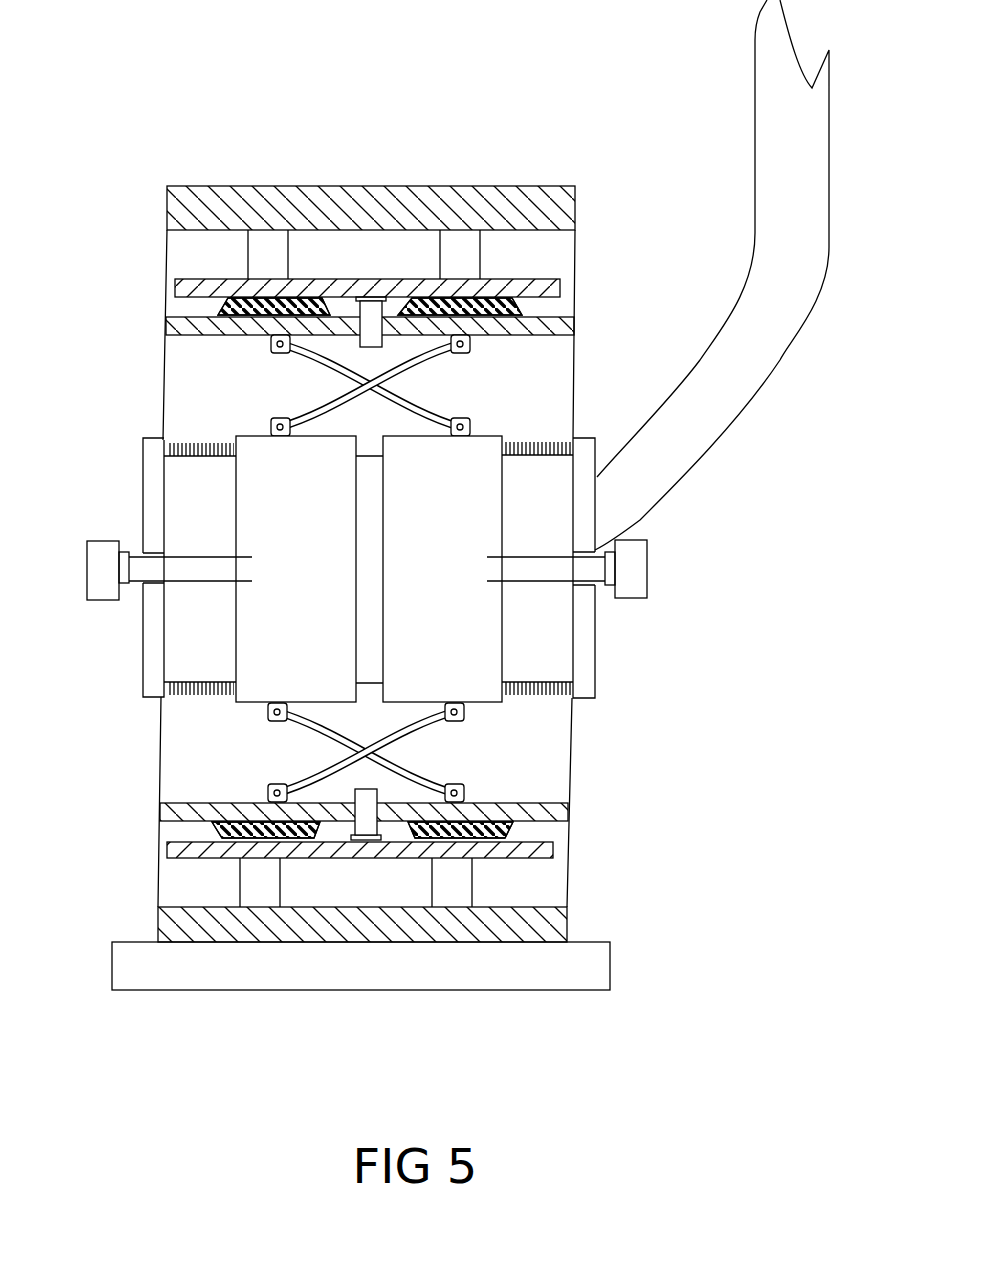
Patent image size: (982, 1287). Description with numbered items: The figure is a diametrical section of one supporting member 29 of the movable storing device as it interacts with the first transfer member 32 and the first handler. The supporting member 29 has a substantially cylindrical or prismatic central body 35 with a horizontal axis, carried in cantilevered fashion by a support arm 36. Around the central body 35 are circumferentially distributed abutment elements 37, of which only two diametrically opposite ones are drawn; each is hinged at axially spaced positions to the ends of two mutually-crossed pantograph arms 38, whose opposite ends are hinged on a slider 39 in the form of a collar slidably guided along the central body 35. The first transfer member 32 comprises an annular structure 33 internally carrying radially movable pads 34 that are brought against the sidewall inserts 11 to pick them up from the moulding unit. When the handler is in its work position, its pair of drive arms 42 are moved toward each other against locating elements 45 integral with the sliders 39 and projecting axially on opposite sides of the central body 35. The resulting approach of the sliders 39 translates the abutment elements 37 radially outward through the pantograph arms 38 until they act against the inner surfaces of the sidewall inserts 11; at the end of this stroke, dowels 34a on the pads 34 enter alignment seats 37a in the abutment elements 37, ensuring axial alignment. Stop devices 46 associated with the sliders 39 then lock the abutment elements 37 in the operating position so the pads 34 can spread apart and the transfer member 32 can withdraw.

The sidewall insert 11 is at (228, 306).
The supporting member 29 is at (602, 660).
The first transfer member 32 is at (620, 955).
The annular structure 33 is at (215, 200).
The pad 34 is at (203, 287).
The dowel 34a is at (378, 300).
The central body 35 is at (197, 513).
The support arm 36 is at (777, 102).
The abutment element 37 is at (548, 328).
The alignment seat 37a is at (404, 312).
The pantograph arm 38 is at (307, 405).
The slider 39 is at (253, 688).
The drive arm 42 is at (97, 590).
The locating element 45 is at (140, 580).
The stop device 46 is at (193, 443).